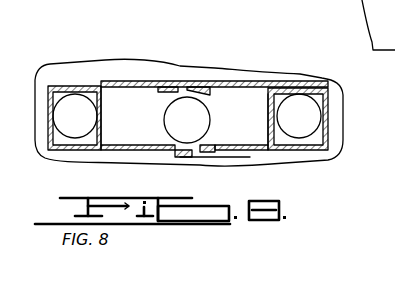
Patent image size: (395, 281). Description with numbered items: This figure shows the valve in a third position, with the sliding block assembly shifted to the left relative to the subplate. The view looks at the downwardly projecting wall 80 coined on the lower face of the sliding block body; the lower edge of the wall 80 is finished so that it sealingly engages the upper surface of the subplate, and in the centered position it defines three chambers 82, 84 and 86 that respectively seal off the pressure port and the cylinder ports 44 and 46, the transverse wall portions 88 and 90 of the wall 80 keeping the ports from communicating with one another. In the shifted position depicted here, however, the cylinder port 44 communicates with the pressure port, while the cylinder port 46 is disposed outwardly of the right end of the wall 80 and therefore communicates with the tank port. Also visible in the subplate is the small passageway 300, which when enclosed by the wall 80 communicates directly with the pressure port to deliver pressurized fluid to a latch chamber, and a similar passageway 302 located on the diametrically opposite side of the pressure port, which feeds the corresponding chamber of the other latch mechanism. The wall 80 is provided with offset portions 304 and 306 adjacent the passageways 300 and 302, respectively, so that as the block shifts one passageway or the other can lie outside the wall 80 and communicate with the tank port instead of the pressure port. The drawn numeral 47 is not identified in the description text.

The cylinder port 44 is at (60, 100).
The cylinder port 46 is at (294, 100).
The third roller 47 is at (200, 104).
The wall 80 is at (240, 90).
The chamber 82 is at (133, 100).
The chamber 84 is at (92, 90).
The chamber 86 is at (320, 90).
The transverse wall portion 88 is at (103, 123).
The transverse wall portion 90 is at (268, 112).
The passageway 300 is at (220, 148).
The passageway 302 is at (180, 84).
The offset portion 304 is at (177, 153).
The offset portion 306 is at (200, 86).